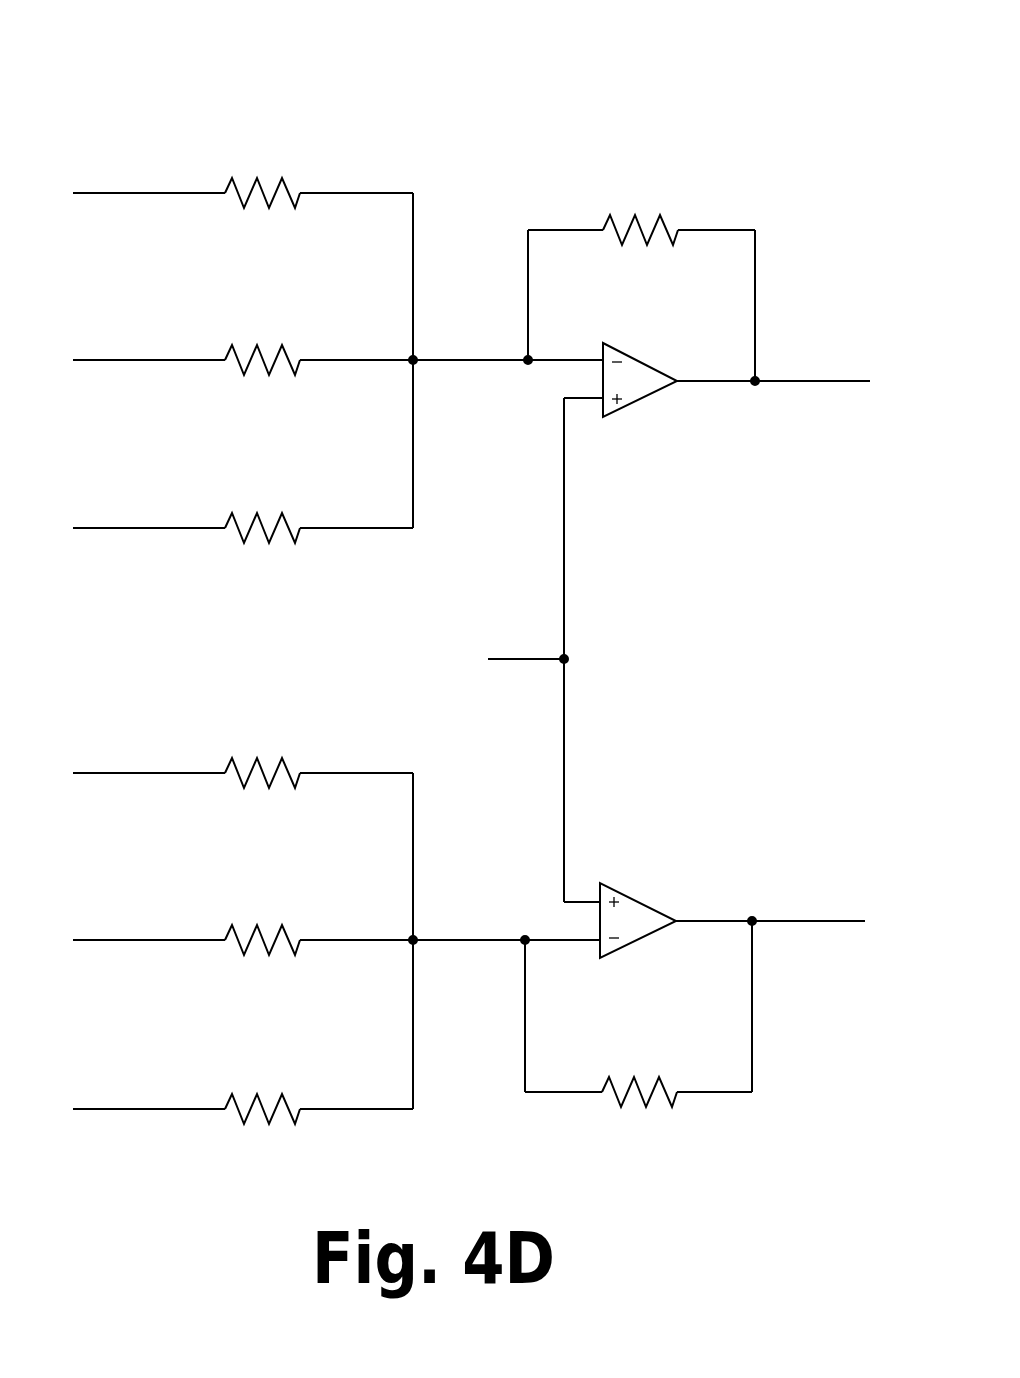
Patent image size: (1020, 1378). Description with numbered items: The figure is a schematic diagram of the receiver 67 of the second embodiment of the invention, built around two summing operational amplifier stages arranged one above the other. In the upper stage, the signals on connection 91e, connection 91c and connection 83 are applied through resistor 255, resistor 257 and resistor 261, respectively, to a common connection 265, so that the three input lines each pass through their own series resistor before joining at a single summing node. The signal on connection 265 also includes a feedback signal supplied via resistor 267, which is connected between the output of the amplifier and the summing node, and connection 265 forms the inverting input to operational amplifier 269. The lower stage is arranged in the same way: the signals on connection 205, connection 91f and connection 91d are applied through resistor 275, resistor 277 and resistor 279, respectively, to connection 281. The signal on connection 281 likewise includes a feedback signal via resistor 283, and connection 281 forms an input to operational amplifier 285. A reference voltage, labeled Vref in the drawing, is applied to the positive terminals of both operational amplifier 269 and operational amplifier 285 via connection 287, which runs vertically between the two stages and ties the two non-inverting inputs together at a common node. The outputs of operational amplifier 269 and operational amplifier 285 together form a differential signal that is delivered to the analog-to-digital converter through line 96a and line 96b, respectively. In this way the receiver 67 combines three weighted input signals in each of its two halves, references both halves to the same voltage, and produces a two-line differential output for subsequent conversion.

The receiver 67 is at (417, 74).
The connection 91e is at (148, 193).
The connection 91c is at (148, 360).
The connection 83 is at (148, 528).
The connection 205 is at (148, 773).
The connection 91f is at (146, 940).
The connection 91d is at (146, 1109).
The resistor 255 is at (262, 165).
The resistor 257 is at (262, 332).
The resistor 261 is at (262, 500).
The resistor 275 is at (262, 745).
The resistor 277 is at (260, 910).
The resistor 279 is at (260, 1078).
The connection 265 is at (433, 360).
The connection 281 is at (450, 940).
The feedback resistor 267 is at (642, 202).
The feedback resistor 283 is at (638, 1063).
The operational amplifier 269 is at (620, 410).
The operational amplifier 285 is at (656, 910).
The line 96a is at (793, 382).
The line 96b is at (787, 920).
The connection 287 is at (563, 659).